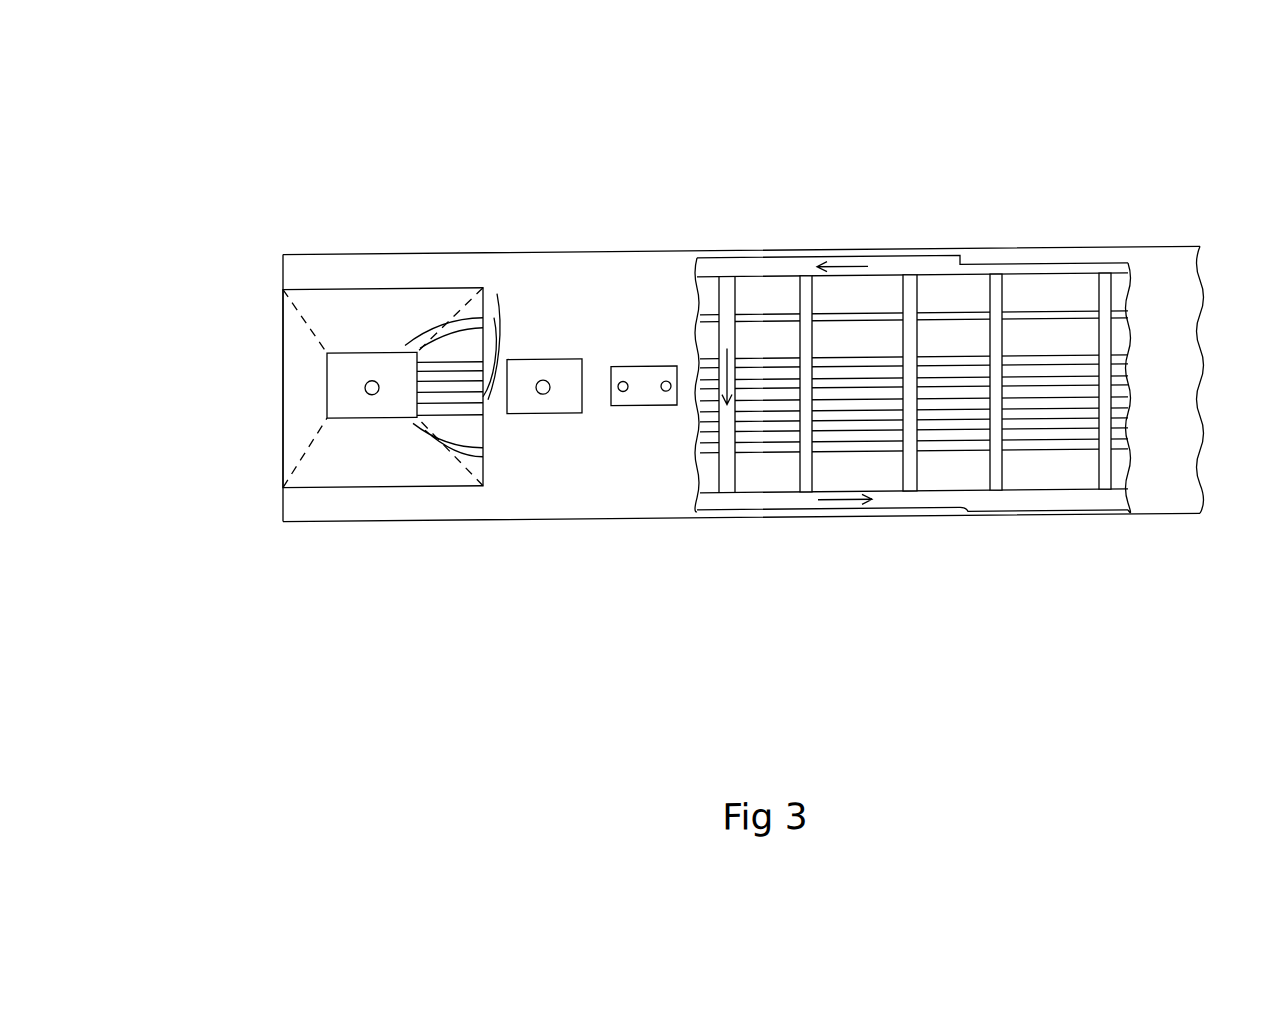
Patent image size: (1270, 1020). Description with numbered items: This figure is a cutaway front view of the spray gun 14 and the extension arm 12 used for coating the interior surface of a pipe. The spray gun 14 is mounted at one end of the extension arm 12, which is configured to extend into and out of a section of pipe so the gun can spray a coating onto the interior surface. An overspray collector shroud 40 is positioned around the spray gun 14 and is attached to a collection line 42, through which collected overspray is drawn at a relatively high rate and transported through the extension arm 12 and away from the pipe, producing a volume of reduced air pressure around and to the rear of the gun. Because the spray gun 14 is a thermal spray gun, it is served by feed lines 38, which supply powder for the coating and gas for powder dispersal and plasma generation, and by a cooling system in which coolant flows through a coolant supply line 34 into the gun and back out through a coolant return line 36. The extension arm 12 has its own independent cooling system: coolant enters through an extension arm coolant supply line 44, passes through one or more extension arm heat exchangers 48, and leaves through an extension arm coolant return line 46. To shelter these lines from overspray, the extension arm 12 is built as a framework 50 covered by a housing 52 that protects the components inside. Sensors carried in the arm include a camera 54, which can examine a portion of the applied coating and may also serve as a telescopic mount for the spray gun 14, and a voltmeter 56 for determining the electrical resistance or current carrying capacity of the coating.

The extension arm 12 is at (603, 246).
The spray gun 14 is at (327, 351).
The coolant supply line 34 is at (405, 341).
The coolant return line 36 is at (437, 444).
The feed lines 38 is at (497, 290).
The overspray collector shroud 40 is at (340, 310).
The collection line 42 is at (1075, 430).
The extension arm coolant supply line 44 is at (941, 396).
The extension arm coolant return line 46 is at (885, 499).
The extension arm heat exchanger 48 is at (727, 466).
The framework 50 is at (997, 468).
The housing 52 is at (1163, 280).
The camera 54 is at (530, 406).
The voltmeter 56 is at (640, 395).